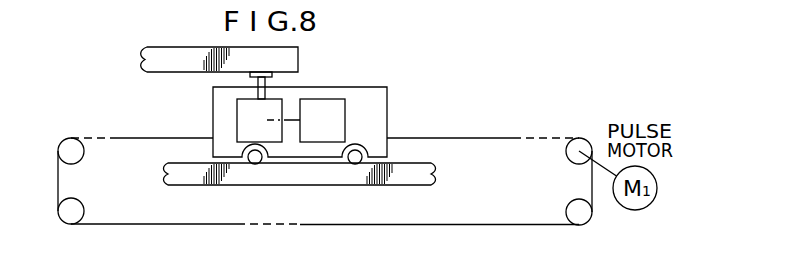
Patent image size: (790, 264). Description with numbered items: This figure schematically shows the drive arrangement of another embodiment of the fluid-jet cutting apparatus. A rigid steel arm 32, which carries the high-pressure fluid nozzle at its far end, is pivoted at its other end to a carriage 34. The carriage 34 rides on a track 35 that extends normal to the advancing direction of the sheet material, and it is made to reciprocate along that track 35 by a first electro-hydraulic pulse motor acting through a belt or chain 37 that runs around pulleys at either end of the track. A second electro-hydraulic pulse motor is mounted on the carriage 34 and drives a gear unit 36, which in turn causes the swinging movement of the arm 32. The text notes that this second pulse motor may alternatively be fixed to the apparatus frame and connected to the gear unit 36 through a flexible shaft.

The arm 32 is at (192, 65).
The carriage 34 is at (335, 87).
The track 35 is at (420, 178).
The gear unit 36 is at (247, 114).
The belt or chain 37 is at (520, 227).